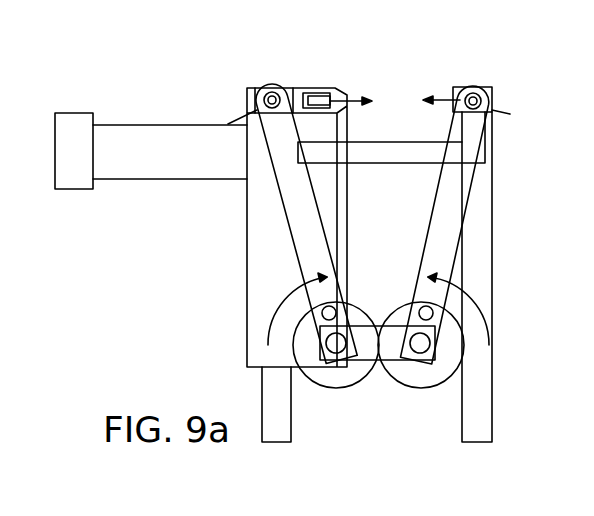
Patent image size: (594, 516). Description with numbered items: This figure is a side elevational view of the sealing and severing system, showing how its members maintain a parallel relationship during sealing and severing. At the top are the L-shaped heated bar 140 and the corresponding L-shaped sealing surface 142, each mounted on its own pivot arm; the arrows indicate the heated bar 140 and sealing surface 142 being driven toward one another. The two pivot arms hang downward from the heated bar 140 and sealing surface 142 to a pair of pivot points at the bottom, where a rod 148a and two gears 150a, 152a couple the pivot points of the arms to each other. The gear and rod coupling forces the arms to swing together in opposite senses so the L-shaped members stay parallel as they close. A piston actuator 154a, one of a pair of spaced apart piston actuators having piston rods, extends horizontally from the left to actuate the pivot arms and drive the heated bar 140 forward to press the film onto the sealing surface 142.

The heated bar 140 is at (318, 92).
The sealing surface 142 is at (448, 90).
The rod 148a is at (393, 327).
The gear 150a is at (350, 377).
The gear 152a is at (433, 375).
The piston actuator 154a is at (163, 130).